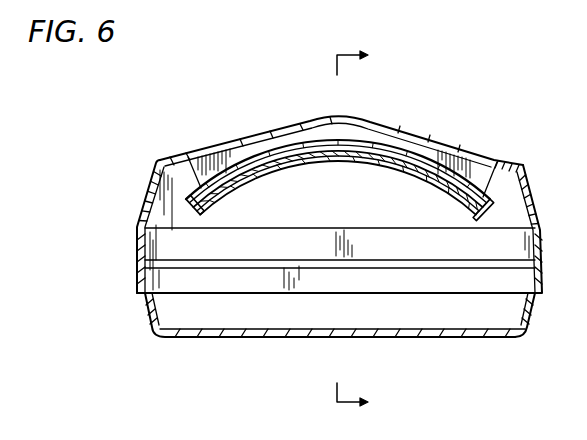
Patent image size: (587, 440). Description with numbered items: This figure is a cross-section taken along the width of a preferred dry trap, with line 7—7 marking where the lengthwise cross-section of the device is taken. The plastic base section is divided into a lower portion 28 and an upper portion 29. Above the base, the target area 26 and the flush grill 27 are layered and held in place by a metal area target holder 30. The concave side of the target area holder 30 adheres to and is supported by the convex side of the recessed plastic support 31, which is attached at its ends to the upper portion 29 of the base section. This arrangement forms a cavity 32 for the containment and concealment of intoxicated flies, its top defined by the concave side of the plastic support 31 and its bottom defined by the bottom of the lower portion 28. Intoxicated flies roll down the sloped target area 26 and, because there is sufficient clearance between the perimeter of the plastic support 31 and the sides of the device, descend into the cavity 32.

The target area 26 is at (230, 185).
The flush grill 27 is at (263, 157).
The lower portion 28 is at (150, 314).
The upper portion 29 is at (141, 218).
The metal area target holder 30 is at (397, 158).
The recessed plastic support 31 is at (452, 180).
The cavity 32 is at (473, 285).
The section line 7— 7 is at (361, 232).